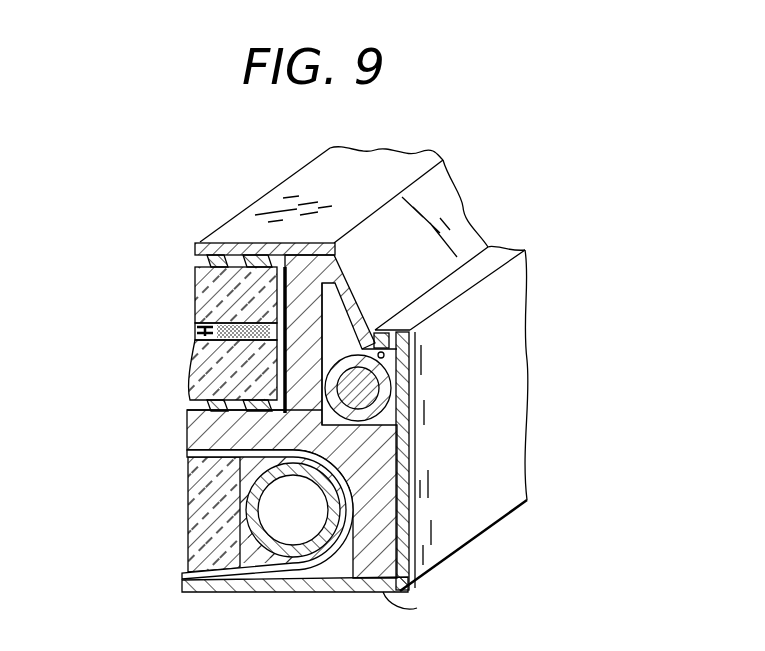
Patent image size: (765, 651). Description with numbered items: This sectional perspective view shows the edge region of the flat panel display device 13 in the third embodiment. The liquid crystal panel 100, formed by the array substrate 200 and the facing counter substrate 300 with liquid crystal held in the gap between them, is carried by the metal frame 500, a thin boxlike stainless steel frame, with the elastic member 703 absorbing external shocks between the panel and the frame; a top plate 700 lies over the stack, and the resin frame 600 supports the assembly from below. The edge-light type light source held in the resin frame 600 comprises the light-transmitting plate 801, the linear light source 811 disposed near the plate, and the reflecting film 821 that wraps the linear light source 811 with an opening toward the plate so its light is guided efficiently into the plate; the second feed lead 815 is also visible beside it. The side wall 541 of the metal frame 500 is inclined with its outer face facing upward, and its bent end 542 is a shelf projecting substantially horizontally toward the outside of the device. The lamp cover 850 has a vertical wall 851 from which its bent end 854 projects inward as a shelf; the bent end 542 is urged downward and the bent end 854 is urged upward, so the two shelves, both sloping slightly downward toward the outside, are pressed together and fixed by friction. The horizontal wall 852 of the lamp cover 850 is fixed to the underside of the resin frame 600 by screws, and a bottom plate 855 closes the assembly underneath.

The flat panel display device 13 is at (474, 156).
The liquid crystal panel 100 is at (110, 272).
The array substrate 200 is at (203, 367).
The counter substrate 300 is at (194, 293).
The metal frame 500 is at (385, 163).
The side wall 541 is at (459, 218).
The bent end 542 is at (387, 323).
The resin frame 600 is at (200, 439).
The top plate 700 is at (230, 249).
The elastic member 703 is at (196, 391).
The light-transmitting plate 801 is at (187, 516).
The linear light source 811 is at (268, 562).
The second feed lead 815 is at (391, 370).
The reflecting film 821 is at (303, 569).
The lamp cover 850 is at (623, 363).
The vertical wall 851 is at (515, 435).
The horizontal wall 852 is at (417, 608).
The bent end 854 is at (400, 328).
The bottom plate 855 is at (192, 594).